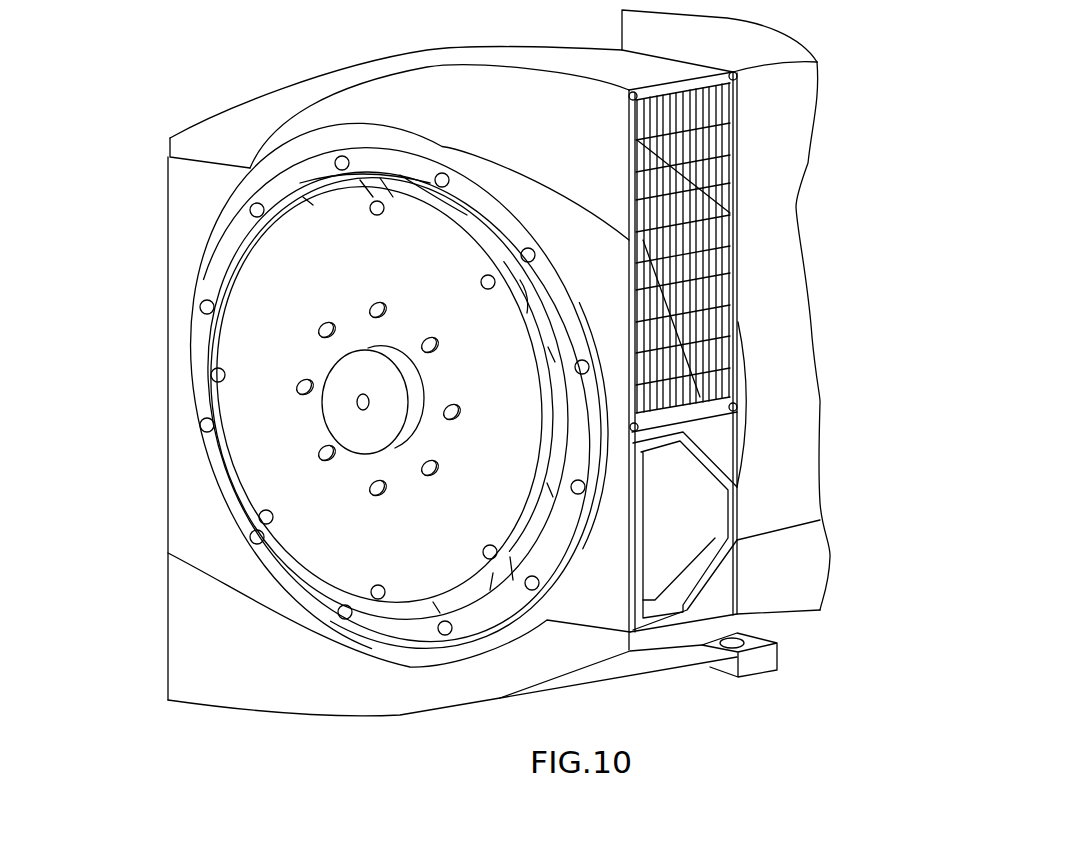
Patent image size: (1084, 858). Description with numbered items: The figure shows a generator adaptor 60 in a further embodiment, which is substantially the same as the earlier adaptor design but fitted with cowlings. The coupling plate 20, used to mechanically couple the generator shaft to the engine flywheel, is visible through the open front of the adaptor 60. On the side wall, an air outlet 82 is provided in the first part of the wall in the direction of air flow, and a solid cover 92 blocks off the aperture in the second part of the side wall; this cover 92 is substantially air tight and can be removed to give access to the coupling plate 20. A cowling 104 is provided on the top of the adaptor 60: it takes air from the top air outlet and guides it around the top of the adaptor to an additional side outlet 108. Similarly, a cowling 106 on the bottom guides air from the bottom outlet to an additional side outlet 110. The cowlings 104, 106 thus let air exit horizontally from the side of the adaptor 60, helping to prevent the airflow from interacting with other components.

The coupling plate 20 is at (250, 338).
The adaptor 60 is at (168, 470).
The air outlet 82 is at (737, 288).
The solid cover 92 is at (677, 537).
The cowling 104 is at (460, 64).
The cowling 106 is at (350, 697).
The additional side outlet 108 is at (735, 162).
The additional side outlet 110 is at (168, 617).